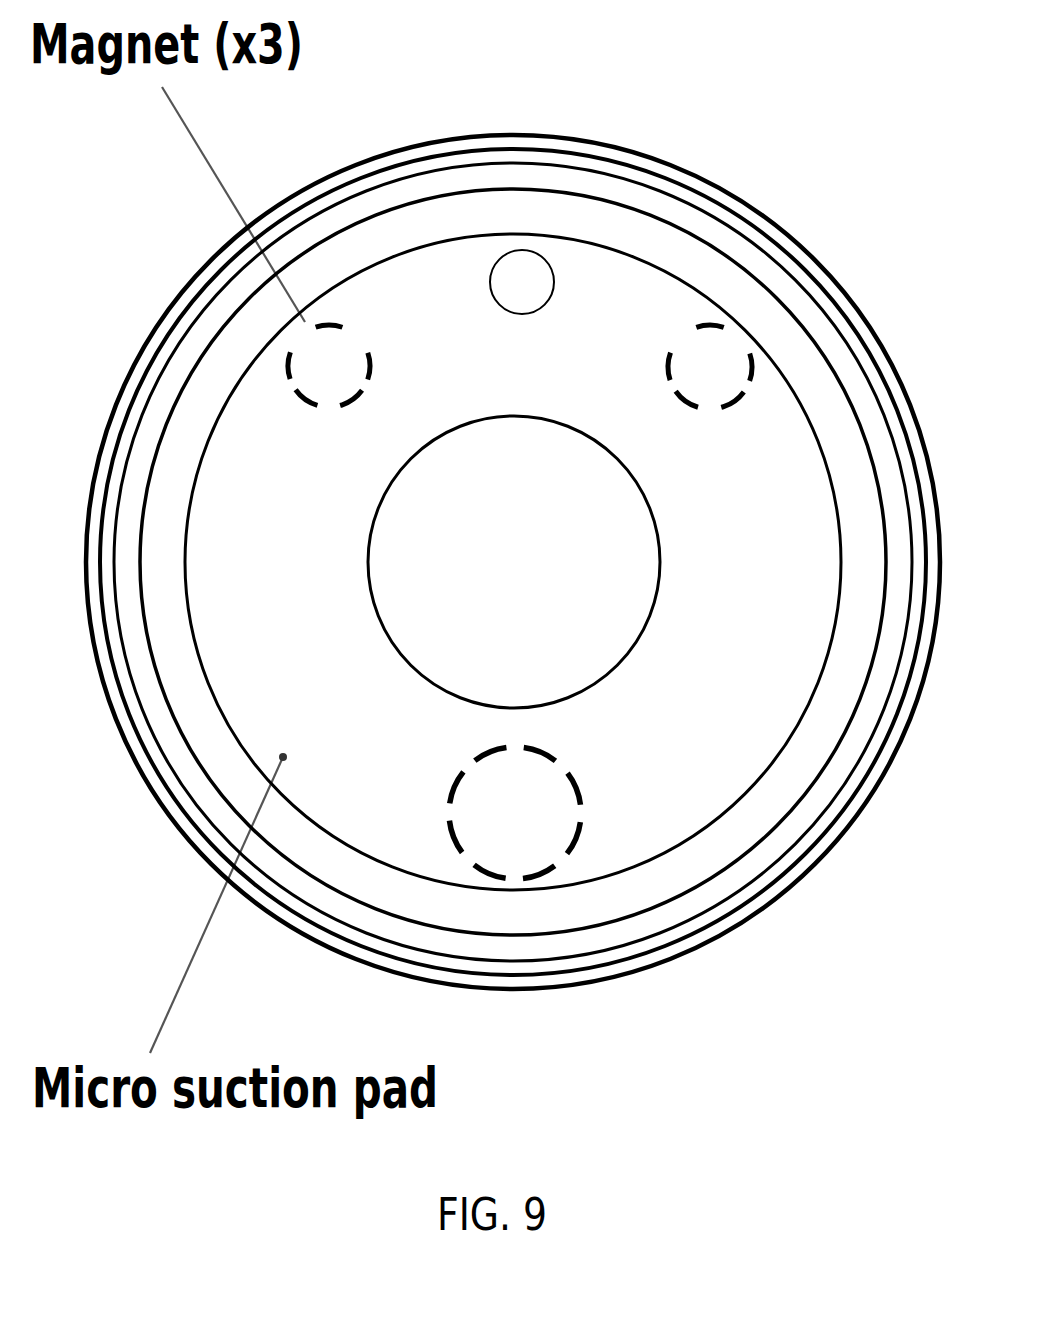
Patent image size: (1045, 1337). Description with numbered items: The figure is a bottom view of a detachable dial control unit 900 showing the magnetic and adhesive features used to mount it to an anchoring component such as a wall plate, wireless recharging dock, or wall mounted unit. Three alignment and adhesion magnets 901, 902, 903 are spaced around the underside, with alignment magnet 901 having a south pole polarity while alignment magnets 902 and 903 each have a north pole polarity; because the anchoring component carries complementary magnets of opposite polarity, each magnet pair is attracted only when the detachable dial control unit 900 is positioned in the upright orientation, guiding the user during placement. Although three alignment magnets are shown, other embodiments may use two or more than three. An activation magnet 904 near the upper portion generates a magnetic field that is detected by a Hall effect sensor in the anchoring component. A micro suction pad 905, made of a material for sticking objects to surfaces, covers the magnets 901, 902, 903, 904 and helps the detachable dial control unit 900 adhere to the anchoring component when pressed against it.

The detachable dial control unit 900 is at (880, 30).
The alignment magnet 901 is at (727, 325).
The alignment magnet 902 is at (343, 328).
The alignment magnet 903 is at (545, 872).
The activation magnet 904 is at (548, 252).
The micro suction pad 905 is at (707, 843).